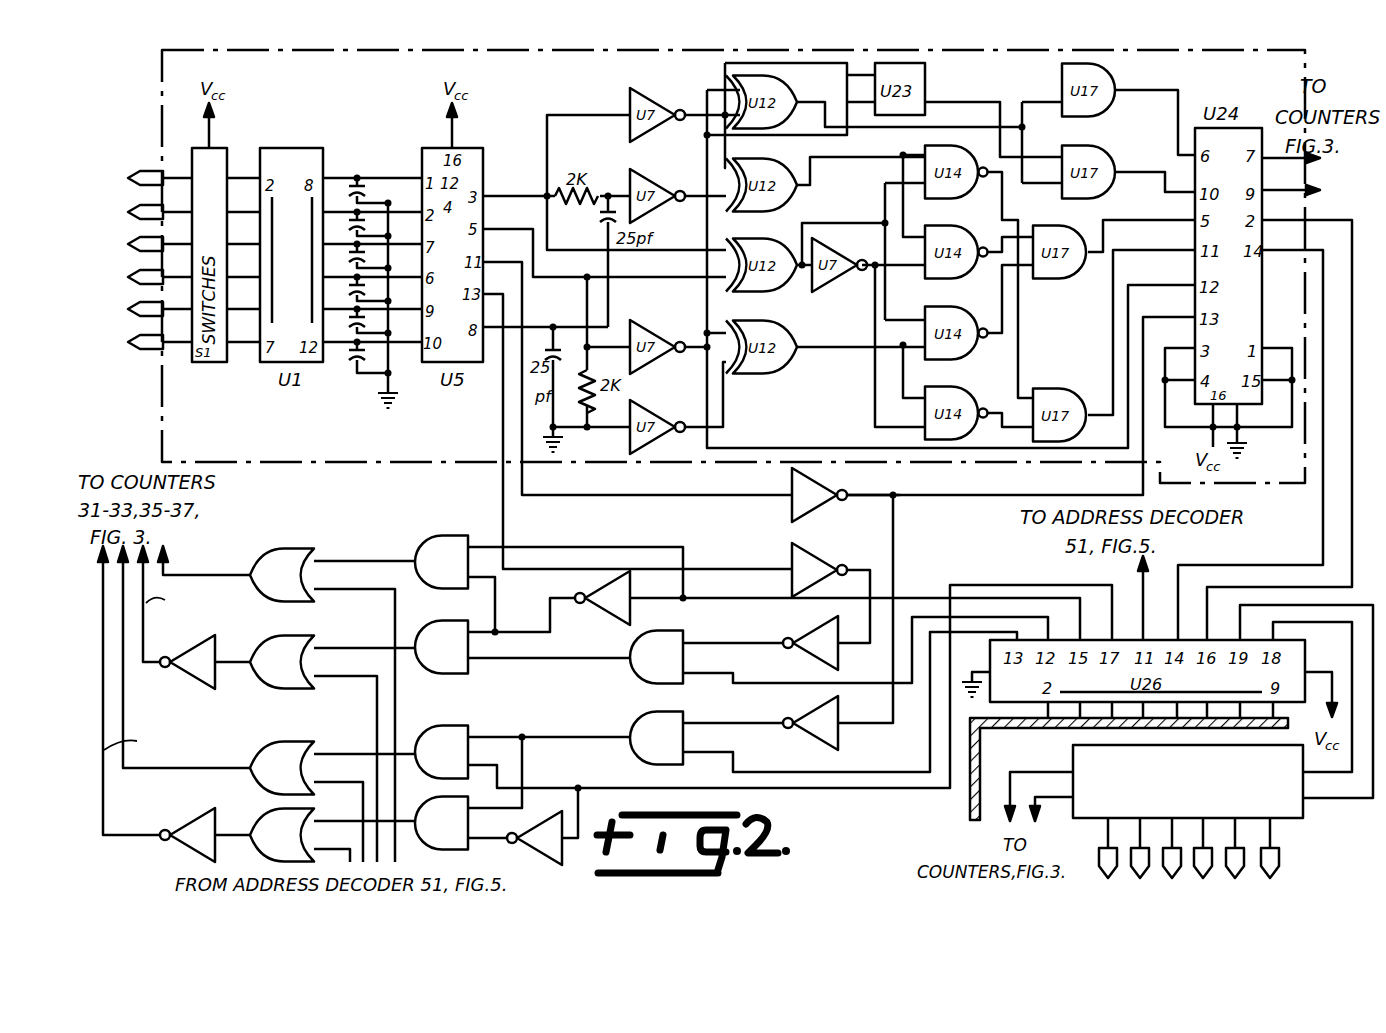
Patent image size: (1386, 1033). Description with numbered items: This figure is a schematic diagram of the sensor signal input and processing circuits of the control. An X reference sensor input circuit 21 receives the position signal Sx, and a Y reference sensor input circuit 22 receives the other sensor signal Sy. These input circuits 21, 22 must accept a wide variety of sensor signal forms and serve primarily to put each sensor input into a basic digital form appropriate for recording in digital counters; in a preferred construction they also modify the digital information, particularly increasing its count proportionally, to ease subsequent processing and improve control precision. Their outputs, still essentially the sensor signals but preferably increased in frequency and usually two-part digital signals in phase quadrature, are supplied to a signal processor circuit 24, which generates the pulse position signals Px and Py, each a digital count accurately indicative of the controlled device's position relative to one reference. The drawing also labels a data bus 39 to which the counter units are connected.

The X reference sensor input circuit 21 is at (346, 460).
The Y reference sensor input circuit 22 is at (1303, 810).
The signal processor circuit 24 is at (760, 521).
The data bus 39 is at (973, 820).